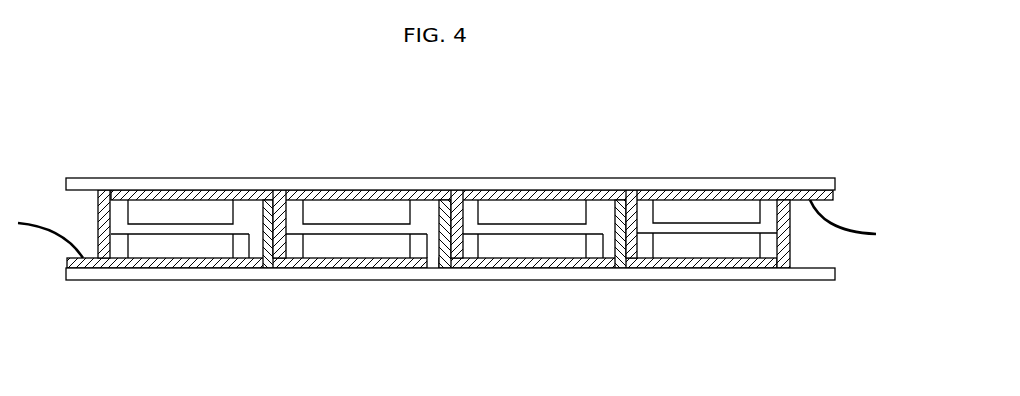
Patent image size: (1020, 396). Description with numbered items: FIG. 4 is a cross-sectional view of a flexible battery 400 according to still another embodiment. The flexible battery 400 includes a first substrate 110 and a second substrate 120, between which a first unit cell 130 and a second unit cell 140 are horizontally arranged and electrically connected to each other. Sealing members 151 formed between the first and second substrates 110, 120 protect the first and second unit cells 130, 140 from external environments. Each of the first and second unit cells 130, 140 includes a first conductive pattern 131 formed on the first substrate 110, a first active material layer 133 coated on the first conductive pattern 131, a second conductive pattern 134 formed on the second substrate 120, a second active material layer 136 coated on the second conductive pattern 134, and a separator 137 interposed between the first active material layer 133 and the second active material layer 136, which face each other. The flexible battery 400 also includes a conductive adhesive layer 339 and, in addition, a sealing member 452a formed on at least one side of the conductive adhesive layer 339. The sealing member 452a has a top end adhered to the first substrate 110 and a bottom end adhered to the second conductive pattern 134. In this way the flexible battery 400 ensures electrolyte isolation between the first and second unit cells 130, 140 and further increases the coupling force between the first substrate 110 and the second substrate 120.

The flexible battery 400 is at (852, 132).
The first substrate 110 is at (835, 182).
The second substrate 120 is at (835, 272).
The sealing member 151 is at (99, 207).
The first conductive pattern 131 is at (118, 199).
The first active material layer 133 is at (170, 212).
The second conductive pattern 134 is at (138, 252).
The second active material layer 136 is at (203, 245).
The separator 137 is at (229, 226).
The first unit cell 130 is at (187, 209).
The second unit cell 140 is at (438, 284).
The conductive adhesive layer 339 is at (267, 266).
The sealing member 452a is at (289, 266).